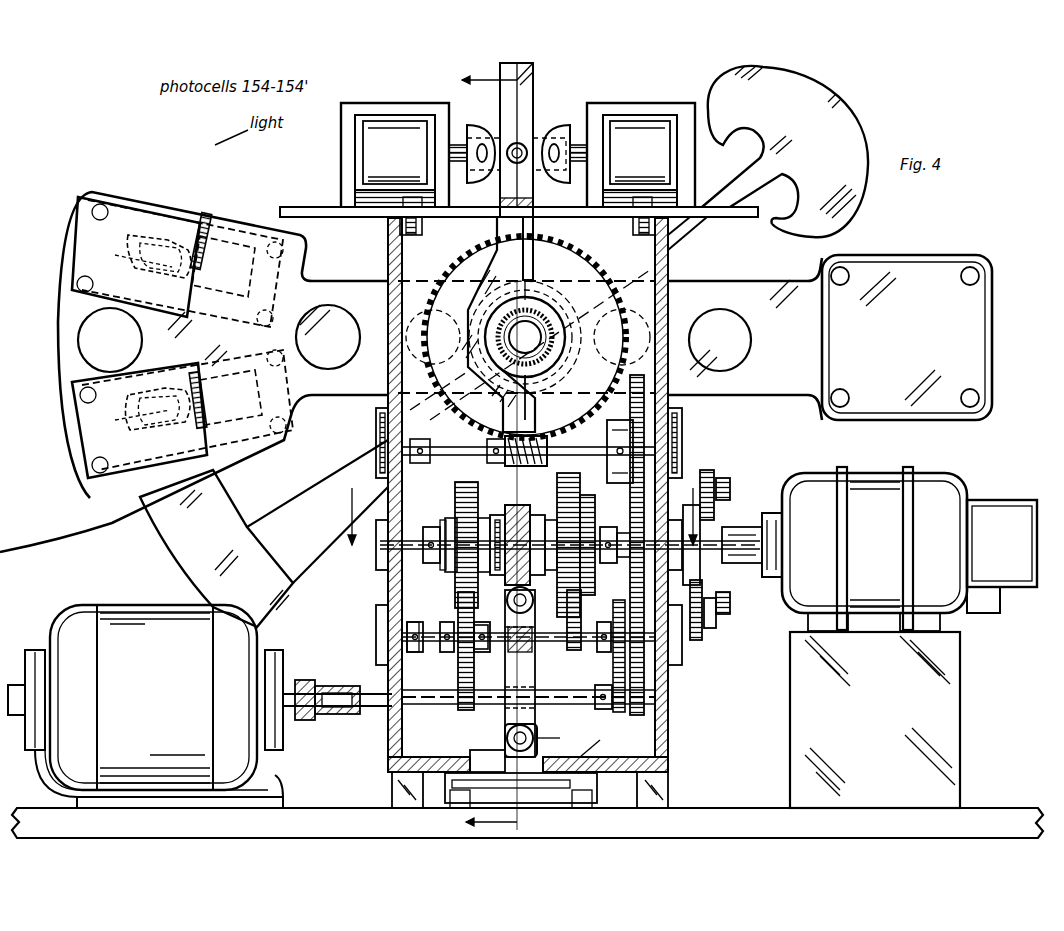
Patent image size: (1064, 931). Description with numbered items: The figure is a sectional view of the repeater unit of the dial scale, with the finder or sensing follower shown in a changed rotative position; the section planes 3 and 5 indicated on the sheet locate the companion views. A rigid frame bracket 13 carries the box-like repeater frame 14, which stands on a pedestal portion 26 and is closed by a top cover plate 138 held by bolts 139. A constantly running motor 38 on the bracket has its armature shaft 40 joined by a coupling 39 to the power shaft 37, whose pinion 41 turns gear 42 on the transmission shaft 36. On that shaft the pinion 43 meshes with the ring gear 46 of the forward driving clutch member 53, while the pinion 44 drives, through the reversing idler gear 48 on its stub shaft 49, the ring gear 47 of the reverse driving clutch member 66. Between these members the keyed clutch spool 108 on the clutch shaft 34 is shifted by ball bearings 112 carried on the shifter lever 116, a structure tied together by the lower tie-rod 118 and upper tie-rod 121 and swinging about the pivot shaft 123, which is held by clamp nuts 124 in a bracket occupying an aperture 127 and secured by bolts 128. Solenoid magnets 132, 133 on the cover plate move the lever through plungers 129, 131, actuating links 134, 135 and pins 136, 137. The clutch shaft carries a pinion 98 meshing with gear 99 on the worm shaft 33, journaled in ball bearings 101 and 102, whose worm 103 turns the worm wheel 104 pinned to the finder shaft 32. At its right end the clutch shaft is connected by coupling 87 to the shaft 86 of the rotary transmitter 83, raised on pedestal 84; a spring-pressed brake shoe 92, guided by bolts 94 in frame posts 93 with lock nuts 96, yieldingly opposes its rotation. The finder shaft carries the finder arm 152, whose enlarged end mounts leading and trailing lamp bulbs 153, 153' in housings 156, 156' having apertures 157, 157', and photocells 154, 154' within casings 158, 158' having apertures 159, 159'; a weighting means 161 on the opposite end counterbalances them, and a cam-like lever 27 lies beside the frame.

The section line 3- 3 is at (645, 668).
The section line 5- 5 is at (519, 505).
The frame bracket 13 is at (527, 823).
The repeater frame 14 is at (388, 584).
The housing pedestal 26 is at (537, 793).
The cam lever 27 is at (698, 228).
The finder shaft 32 is at (545, 318).
The worm shaft 33 is at (445, 447).
The clutch shaft 34 is at (410, 545).
The transmission shaft 36 is at (428, 617).
The power shaft 37 is at (352, 714).
The motor 38 is at (145, 706).
The coupling 39 is at (340, 686).
The armature shaft 40 is at (302, 680).
The pinion 41 is at (605, 720).
The gear 42 is at (618, 560).
The pinion 43 is at (567, 650).
The pinion 44 is at (458, 618).
The ring gear 46 is at (582, 485).
The ring gear 47 is at (458, 482).
The reversing idler gear 48 is at (458, 680).
The stub shaft 49 is at (445, 652).
The forward driving clutch member 53 is at (596, 520).
The reverse driving clutch member 66 is at (455, 510).
The rotary transmitter 83 is at (909, 549).
The pedestal 84 is at (875, 720).
The shaft 86 is at (764, 515).
The coupling 87 is at (745, 530).
The brake shoe 92 is at (710, 478).
The frame posts 93 is at (694, 630).
The bolts 94 is at (730, 488).
The lock nuts 96 is at (712, 620).
The pinion 98 is at (608, 563).
The gear 99 is at (634, 415).
The ball bearing 101 is at (376, 430).
The ball bearing 102 is at (684, 428).
The worm 103 is at (512, 466).
The worm wheel 104 is at (583, 262).
The clutch spool 108 is at (522, 525).
The ball bearing 112 is at (550, 520).
The shifter lever 116 is at (500, 240).
The tie-rod 118 is at (507, 603).
The tie-rod 121 is at (522, 140).
The pivot shaft 123 is at (507, 740).
The clamp nuts 124 is at (548, 735).
The aperture 127 is at (582, 755).
The bolts 128 is at (470, 801).
The plunger 129 is at (458, 145).
The plunger 131 is at (578, 145).
The solenoid magnet 132 is at (395, 155).
The solenoid magnet 133 is at (641, 155).
The actuating link 134 is at (482, 130).
The actuating link 135 is at (555, 136).
The pin 136 is at (484, 162).
The pin 137 is at (554, 162).
The top cover plate 138 is at (360, 217).
The bolts 139 is at (420, 217).
The finder arm 152 is at (354, 283).
The leading lamp bulb 153 is at (132, 464).
The trailing lamp bulb 153' is at (182, 210).
The leading photocell 154 is at (126, 448).
The trailing photocell 154' is at (153, 220).
The lamp housing 156 is at (187, 415).
The lamp housing 156' is at (182, 250).
The light-passing aperture 157 is at (106, 400).
The light-passing aperture 157' is at (113, 240).
The photocell casing 158 is at (121, 421).
The photocell casing 158' is at (136, 241).
The light-passing aperture 159 is at (88, 424).
The light-passing aperture 159' is at (93, 248).
The weighting means 161 is at (907, 337).